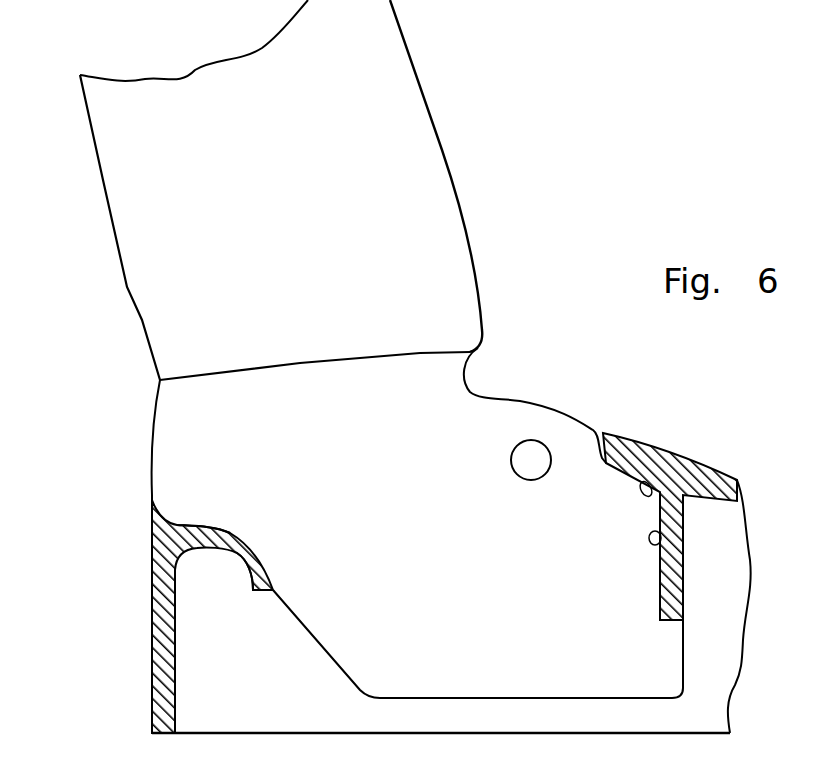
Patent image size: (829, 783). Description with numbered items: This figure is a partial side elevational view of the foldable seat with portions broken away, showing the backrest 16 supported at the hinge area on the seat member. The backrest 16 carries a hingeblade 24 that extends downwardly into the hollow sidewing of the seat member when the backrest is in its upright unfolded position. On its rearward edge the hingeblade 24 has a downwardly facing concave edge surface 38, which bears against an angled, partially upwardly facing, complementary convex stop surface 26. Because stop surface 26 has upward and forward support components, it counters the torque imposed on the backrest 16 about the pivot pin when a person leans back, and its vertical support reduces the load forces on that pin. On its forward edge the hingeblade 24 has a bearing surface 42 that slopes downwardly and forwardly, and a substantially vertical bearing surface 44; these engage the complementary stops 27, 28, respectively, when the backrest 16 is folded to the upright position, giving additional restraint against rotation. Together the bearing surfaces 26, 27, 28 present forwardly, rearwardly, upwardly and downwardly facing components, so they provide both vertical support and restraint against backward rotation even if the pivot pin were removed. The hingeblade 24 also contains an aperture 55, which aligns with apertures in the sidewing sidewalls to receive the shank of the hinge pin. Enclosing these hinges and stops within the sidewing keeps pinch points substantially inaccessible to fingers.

The backrest 16 is at (122, 223).
The hingeblade 24 is at (175, 480).
The concave edge surface 38 is at (227, 533).
The stop surface 26 is at (258, 550).
The aperture 55 is at (532, 444).
The stop 27 is at (660, 480).
The bearing surface 42 is at (630, 466).
The stop 28 is at (683, 517).
The bearing surface 44 is at (660, 585).